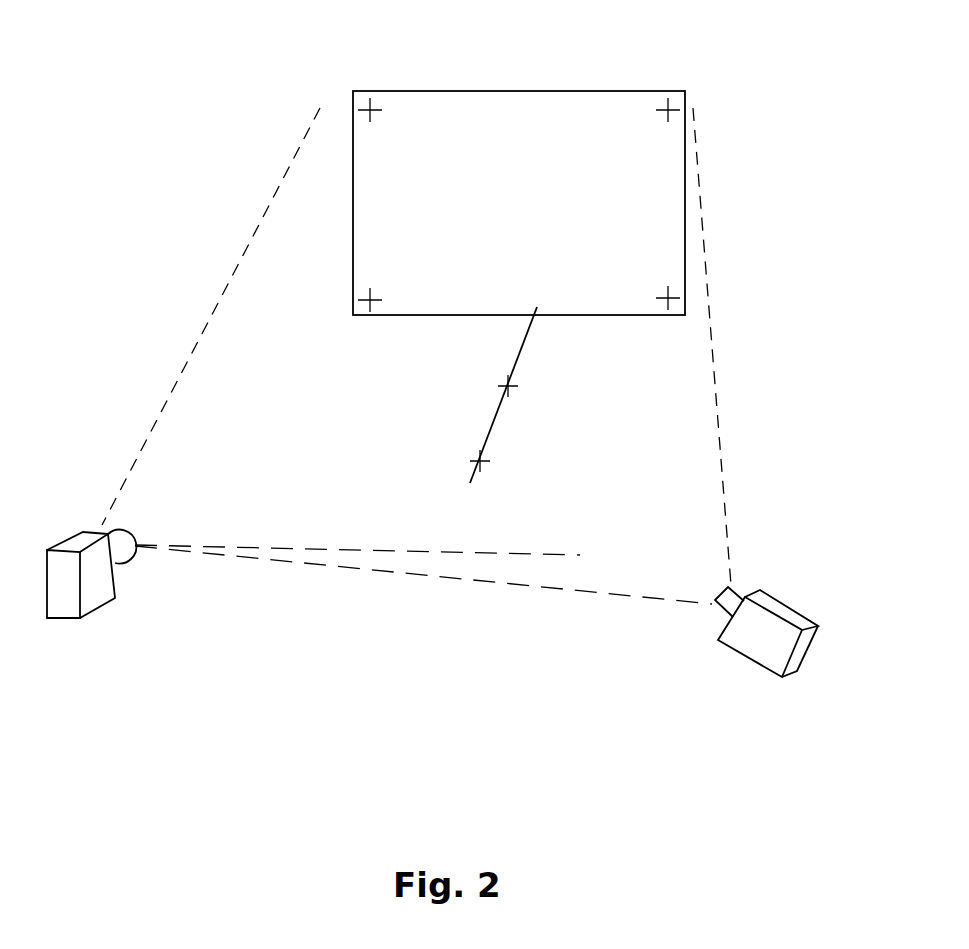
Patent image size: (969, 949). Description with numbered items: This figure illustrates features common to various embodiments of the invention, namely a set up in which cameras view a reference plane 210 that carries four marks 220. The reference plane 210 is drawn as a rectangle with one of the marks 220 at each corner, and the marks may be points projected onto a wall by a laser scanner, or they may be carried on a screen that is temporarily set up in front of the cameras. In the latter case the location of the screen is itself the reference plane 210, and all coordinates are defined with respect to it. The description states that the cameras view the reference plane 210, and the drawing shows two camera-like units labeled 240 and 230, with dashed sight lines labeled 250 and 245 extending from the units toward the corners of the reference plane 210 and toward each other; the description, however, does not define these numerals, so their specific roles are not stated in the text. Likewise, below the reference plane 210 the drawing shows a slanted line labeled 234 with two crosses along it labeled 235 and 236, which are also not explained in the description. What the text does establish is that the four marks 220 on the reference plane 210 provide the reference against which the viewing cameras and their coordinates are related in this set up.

The reference plane 210 is at (538, 216).
The marks 220 is at (668, 110).
The camera 230 is at (753, 663).
The line 234 is at (527, 350).
The point on line 235 is at (507, 387).
The point on line 236 is at (480, 462).
The camera 240 is at (105, 607).
The field of view of camera 230 245 is at (700, 539).
The field of view of camera 240 250 is at (237, 516).